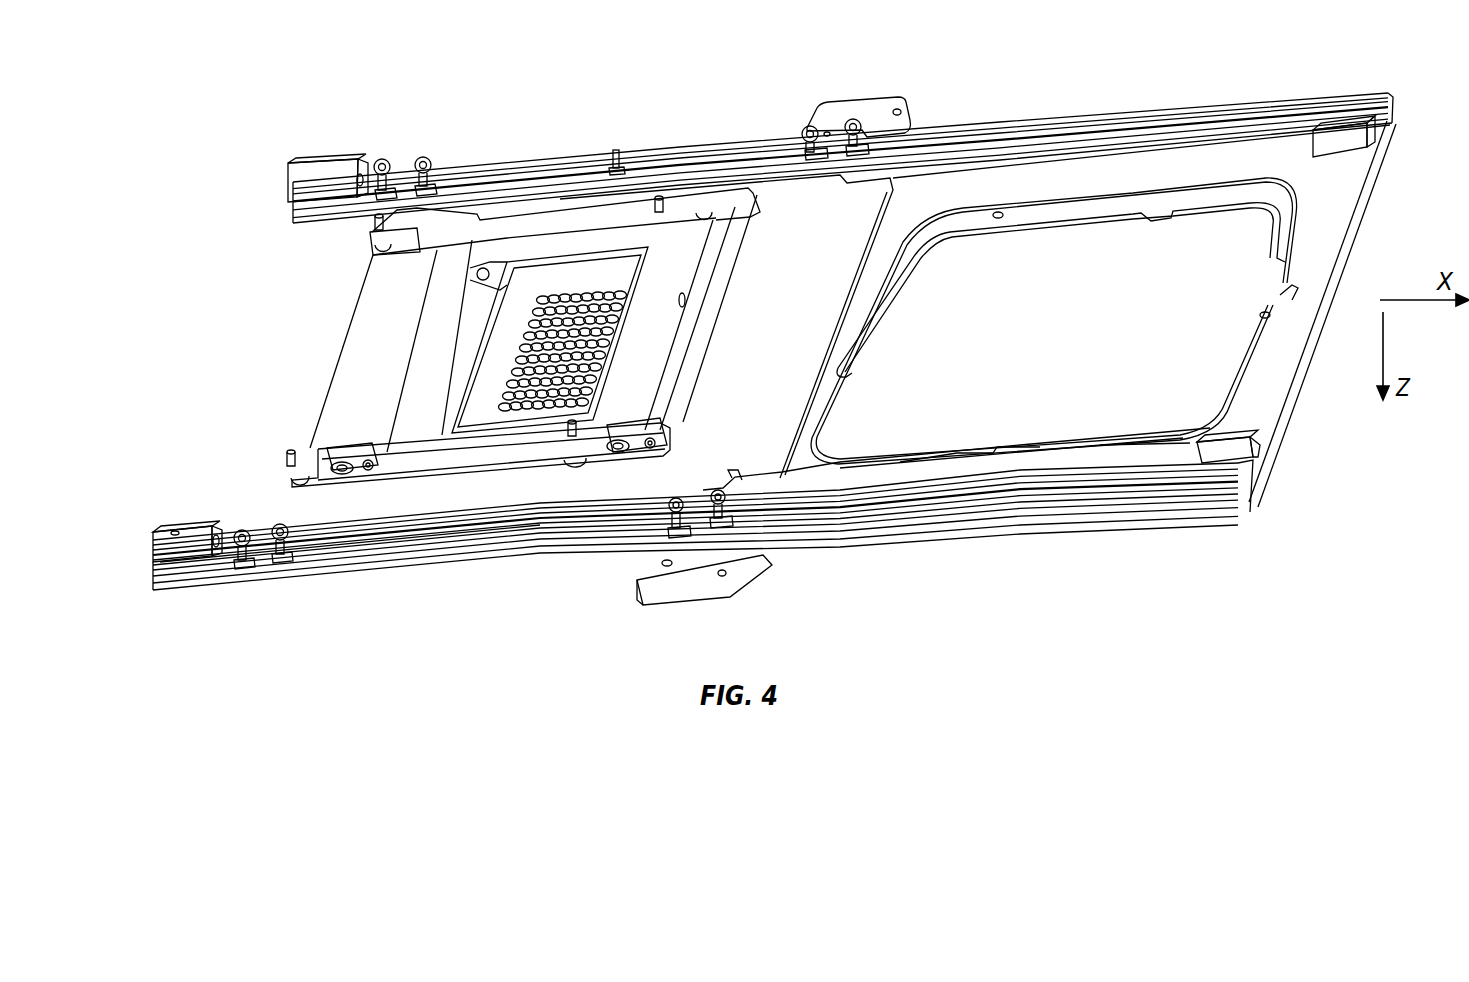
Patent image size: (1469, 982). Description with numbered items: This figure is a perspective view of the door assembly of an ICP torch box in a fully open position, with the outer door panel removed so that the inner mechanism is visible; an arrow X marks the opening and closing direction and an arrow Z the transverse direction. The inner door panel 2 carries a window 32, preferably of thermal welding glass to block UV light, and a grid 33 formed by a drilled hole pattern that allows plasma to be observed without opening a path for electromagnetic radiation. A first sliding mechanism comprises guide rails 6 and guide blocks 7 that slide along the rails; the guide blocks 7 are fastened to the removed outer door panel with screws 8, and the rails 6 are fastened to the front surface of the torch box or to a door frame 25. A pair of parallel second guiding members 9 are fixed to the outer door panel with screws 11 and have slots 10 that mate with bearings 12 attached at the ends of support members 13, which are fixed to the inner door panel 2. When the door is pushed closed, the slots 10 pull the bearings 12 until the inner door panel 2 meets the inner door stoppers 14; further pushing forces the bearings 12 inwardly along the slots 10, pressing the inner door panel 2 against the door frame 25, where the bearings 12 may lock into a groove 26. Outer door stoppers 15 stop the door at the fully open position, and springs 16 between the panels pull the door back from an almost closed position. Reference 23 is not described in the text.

The inner door panel 2 is at (978, 314).
The guide rails 6 is at (1140, 505).
The guide blocks 7 is at (700, 553).
The screws 8 is at (676, 530).
The second guiding members 9 is at (555, 232).
The slots 10 is at (640, 452).
The screws 11 is at (372, 225).
The bearings 12 is at (373, 483).
The support members 13 is at (697, 310).
The inner door stoppers 14 is at (1355, 147).
The outer door stoppers 15 is at (303, 188).
The springs 16 is at (337, 528).
The carrier plate 23 is at (463, 274).
The window 32 is at (463, 274).
The door frame 25 is at (1303, 297).
The groove 26 is at (333, 477).
The grid 33 is at (600, 290).